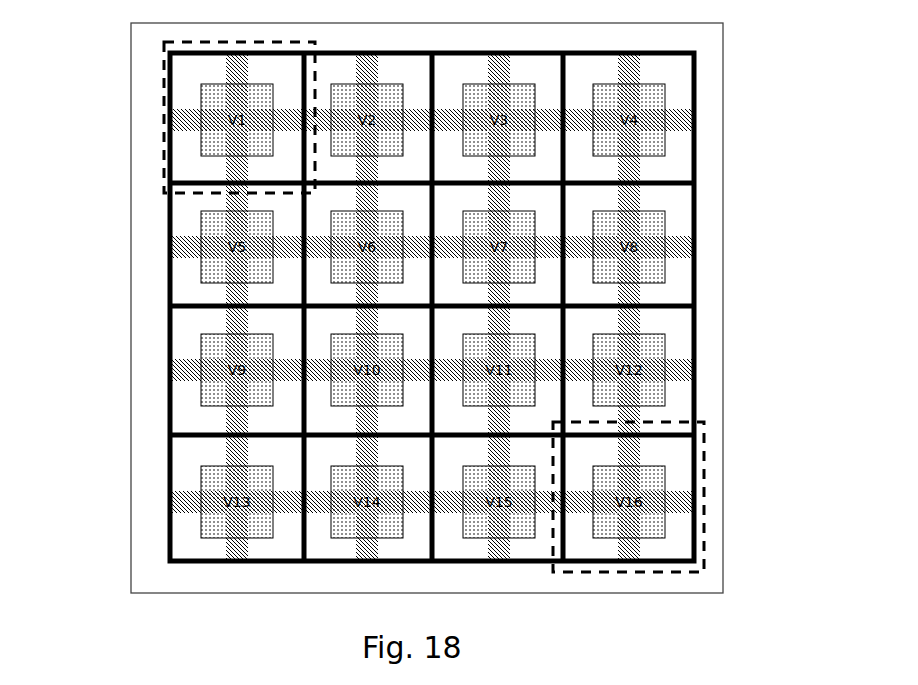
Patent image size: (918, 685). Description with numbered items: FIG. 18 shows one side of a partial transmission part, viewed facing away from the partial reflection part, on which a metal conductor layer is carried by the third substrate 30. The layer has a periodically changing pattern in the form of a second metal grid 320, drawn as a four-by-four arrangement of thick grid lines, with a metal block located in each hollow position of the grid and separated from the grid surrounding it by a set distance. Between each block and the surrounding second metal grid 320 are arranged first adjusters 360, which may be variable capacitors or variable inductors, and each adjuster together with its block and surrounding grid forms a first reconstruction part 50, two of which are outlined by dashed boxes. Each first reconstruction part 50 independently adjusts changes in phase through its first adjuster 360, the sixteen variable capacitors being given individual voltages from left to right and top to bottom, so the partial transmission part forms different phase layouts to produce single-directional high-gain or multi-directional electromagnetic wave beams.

The third substrate 30 is at (157, 398).
The first reconstruction part 50 is at (162, 110).
The second metal grid 320 is at (160, 305).
The first adjuster 360 is at (697, 497).